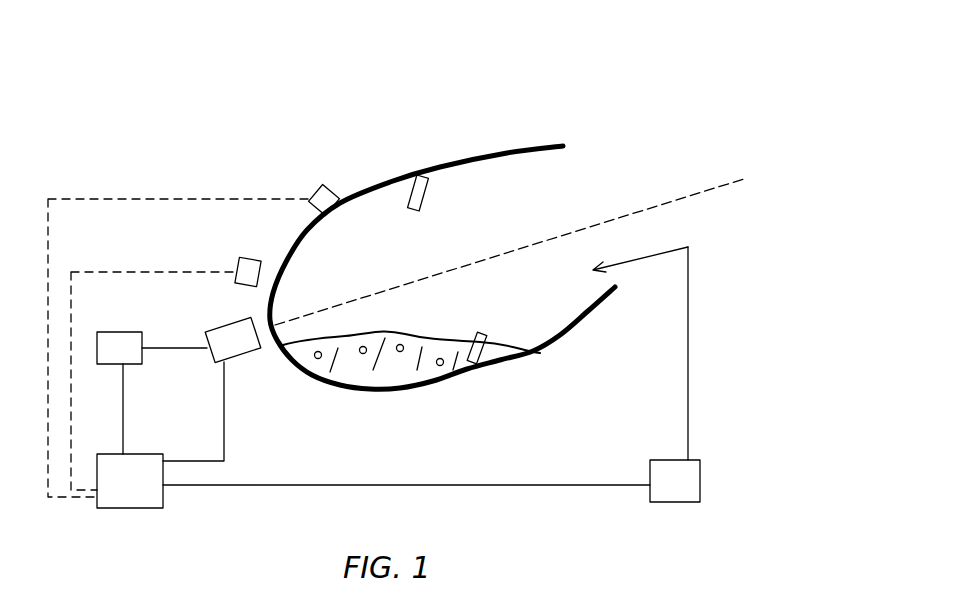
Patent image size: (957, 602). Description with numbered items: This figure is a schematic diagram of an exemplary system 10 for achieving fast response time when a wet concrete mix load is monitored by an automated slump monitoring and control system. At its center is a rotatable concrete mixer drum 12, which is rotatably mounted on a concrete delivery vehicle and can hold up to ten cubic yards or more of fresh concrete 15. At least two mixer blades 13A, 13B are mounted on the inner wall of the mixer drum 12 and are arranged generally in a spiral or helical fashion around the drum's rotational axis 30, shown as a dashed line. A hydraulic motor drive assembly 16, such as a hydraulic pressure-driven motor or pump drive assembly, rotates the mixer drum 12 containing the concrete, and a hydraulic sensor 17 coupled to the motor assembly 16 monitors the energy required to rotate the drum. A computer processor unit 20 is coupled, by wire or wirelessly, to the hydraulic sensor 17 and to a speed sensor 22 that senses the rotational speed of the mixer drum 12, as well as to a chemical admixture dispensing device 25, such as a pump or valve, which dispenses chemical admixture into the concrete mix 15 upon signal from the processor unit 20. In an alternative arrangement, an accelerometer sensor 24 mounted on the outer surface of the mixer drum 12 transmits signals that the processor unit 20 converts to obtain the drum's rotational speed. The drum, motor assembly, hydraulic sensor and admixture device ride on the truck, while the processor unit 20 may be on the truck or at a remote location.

The system 10 is at (440, 107).
The concrete mixer drum 12 is at (523, 138).
The mixer blade 13A is at (397, 183).
The mixer blade 13B is at (485, 348).
The fresh concrete 15 is at (417, 368).
The hydraulic motor drive assembly 16 is at (232, 362).
The hydraulic sensor 17 is at (152, 393).
The computer processor unit 20 is at (373, 481).
The speed sensor 22 is at (247, 263).
The accelerometer sensor 24 is at (317, 192).
The chemical admixture dispensing device 25 is at (675, 481).
The rotational axis 30 is at (735, 190).